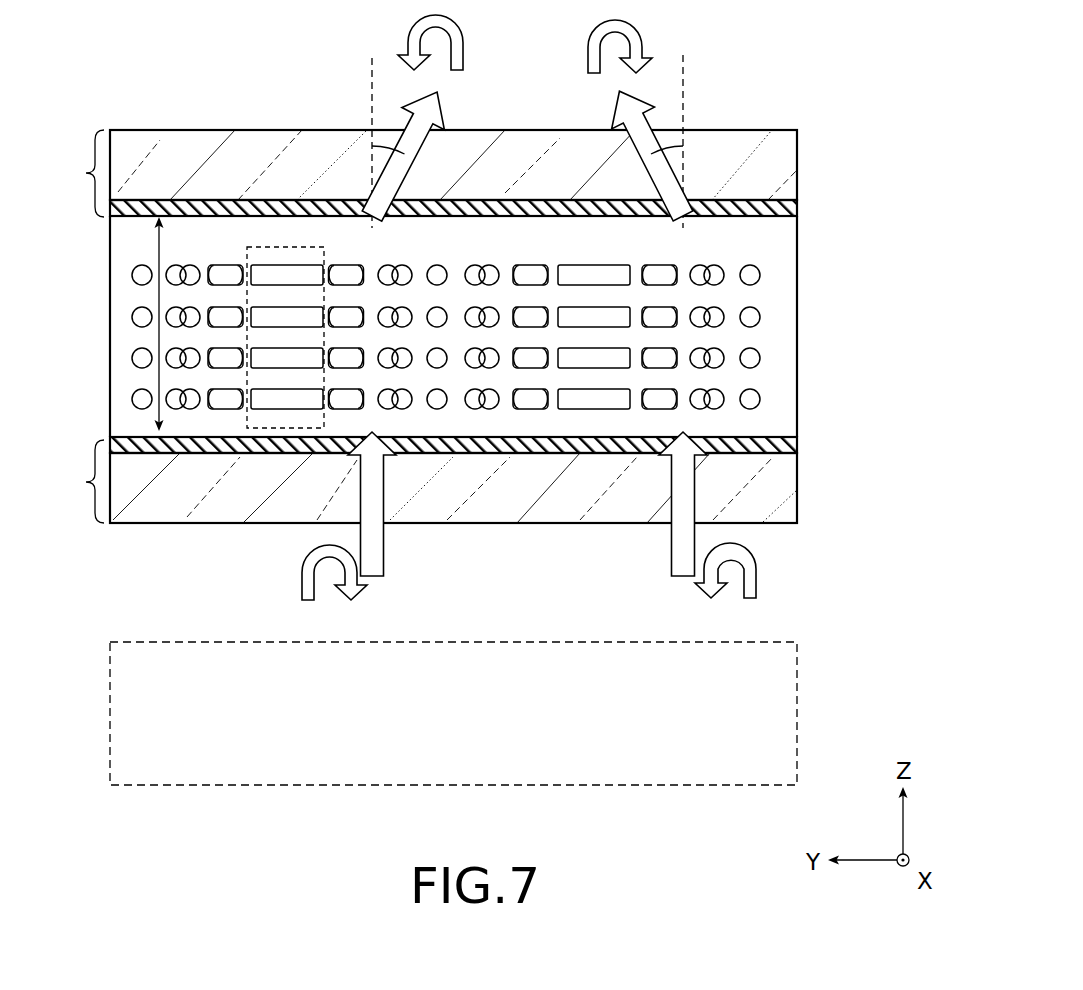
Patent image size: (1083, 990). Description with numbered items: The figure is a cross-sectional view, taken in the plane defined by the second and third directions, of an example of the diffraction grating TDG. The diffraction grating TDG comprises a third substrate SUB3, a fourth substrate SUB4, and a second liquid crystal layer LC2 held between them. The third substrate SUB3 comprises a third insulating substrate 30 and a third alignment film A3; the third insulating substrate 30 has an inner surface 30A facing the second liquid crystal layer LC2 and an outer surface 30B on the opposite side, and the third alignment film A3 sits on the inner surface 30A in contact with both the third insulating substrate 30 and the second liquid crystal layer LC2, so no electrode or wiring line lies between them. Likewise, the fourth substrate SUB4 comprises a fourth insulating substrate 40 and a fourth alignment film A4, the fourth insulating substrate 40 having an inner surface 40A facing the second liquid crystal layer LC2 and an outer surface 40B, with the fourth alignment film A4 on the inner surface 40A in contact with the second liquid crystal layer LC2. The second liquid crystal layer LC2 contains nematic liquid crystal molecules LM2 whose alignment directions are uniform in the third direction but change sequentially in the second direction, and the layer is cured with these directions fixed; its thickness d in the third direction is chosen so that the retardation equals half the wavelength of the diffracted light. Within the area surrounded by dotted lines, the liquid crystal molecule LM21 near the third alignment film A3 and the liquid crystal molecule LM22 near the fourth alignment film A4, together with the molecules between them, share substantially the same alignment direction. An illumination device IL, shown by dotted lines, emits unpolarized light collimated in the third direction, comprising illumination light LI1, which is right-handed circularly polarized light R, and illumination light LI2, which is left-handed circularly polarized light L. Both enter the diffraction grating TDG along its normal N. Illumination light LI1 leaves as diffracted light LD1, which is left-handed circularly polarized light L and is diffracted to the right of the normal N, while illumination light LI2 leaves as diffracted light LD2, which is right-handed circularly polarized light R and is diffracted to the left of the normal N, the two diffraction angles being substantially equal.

The diffraction grating TDG is at (472, 312).
The fourth insulating substrate 40 is at (790, 163).
The inner surface 40A is at (768, 212).
The outer surface 40B is at (775, 124).
The fourth alignment film A4 is at (797, 207).
The third insulating substrate 30 is at (790, 488).
The inner surface 30A is at (770, 437).
The outer surface 30B is at (770, 530).
The third alignment film A3 is at (797, 445).
The fourth substrate SUB4 is at (61, 173).
The third substrate SUB3 is at (61, 481).
The second liquid crystal layer LC2 is at (110, 338).
The liquid crystal molecules LM2 is at (273, 357).
The liquid crystal molecule LM21 is at (270, 400).
The liquid crystal molecule LM22 is at (292, 275).
The thickness of the liquid crystal layer d is at (110, 258).
The normal N is at (366, 68).
The diffracted light LD1 is at (442, 127).
The diffracted light LD2 is at (617, 113).
The illumination light LI1 is at (385, 551).
The illumination light LI2 is at (671, 552).
The left-handed circularly polarized light L is at (584, 307).
The right-handed circularly polarized light R is at (469, 310).
The illumination device IL is at (797, 706).